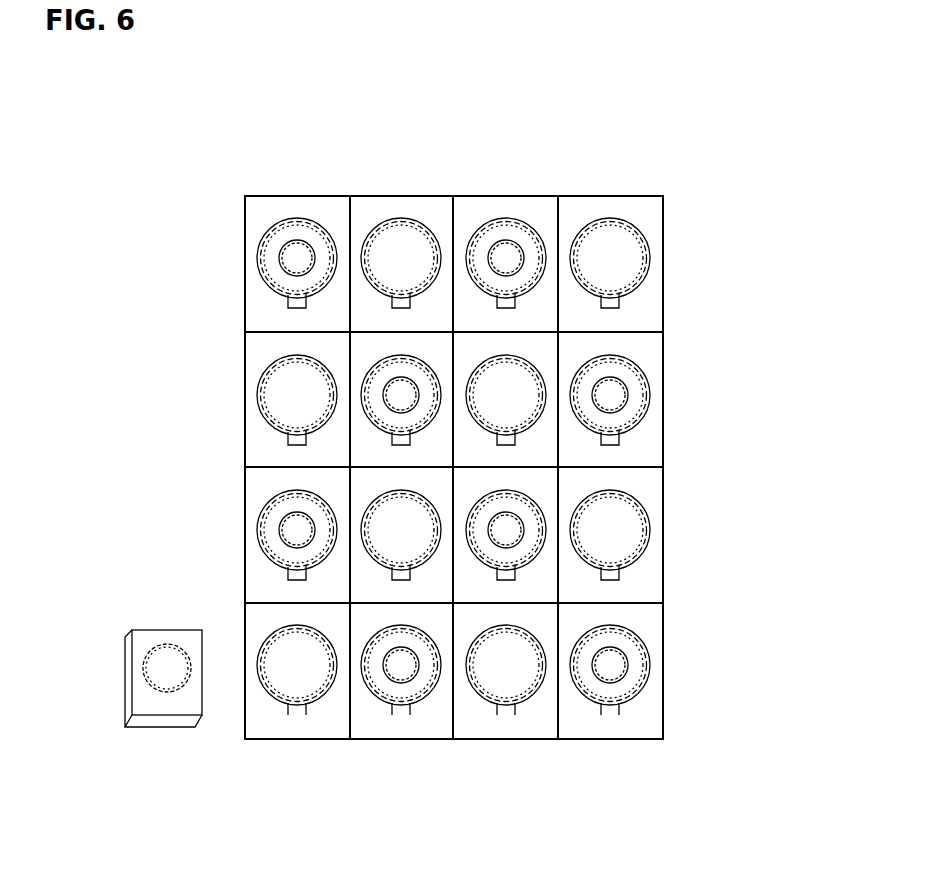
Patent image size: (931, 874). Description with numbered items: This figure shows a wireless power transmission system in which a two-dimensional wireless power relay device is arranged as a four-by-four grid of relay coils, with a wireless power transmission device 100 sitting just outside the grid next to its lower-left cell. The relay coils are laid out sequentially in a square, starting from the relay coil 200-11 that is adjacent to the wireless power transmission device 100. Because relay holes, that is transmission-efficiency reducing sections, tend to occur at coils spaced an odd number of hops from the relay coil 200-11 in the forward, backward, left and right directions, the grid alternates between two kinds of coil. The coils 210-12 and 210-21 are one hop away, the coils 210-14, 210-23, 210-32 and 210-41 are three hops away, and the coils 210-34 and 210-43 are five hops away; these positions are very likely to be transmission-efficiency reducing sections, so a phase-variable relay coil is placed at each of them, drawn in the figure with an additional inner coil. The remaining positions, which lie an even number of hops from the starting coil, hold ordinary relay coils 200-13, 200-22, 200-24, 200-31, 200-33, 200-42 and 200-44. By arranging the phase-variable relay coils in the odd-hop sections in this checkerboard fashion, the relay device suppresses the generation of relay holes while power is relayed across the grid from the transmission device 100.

The wireless power transmission device 100 is at (160, 730).
The relay coil 200-11 is at (296, 740).
The phase-variable relay coil 210-12 is at (405, 740).
The relay coil 200-13 is at (506, 740).
The phase-variable relay coil 210-14 is at (610, 740).
The phase-variable relay coil 210-21 is at (258, 528).
The relay coil 200-22 is at (401, 492).
The phase-variable relay coil 210-23 is at (506, 492).
The relay coil 200-24 is at (650, 530).
The relay coil 200-31 is at (258, 394).
The phase-variable relay coil 210-32 is at (401, 357).
The relay coil 200-33 is at (506, 357).
The phase-variable relay coil 210-34 is at (650, 393).
The phase-variable relay coil 210-41 is at (297, 218).
The relay coil 200-42 is at (403, 218).
The phase-variable relay coil 210-43 is at (507, 218).
The relay coil 200-44 is at (610, 218).